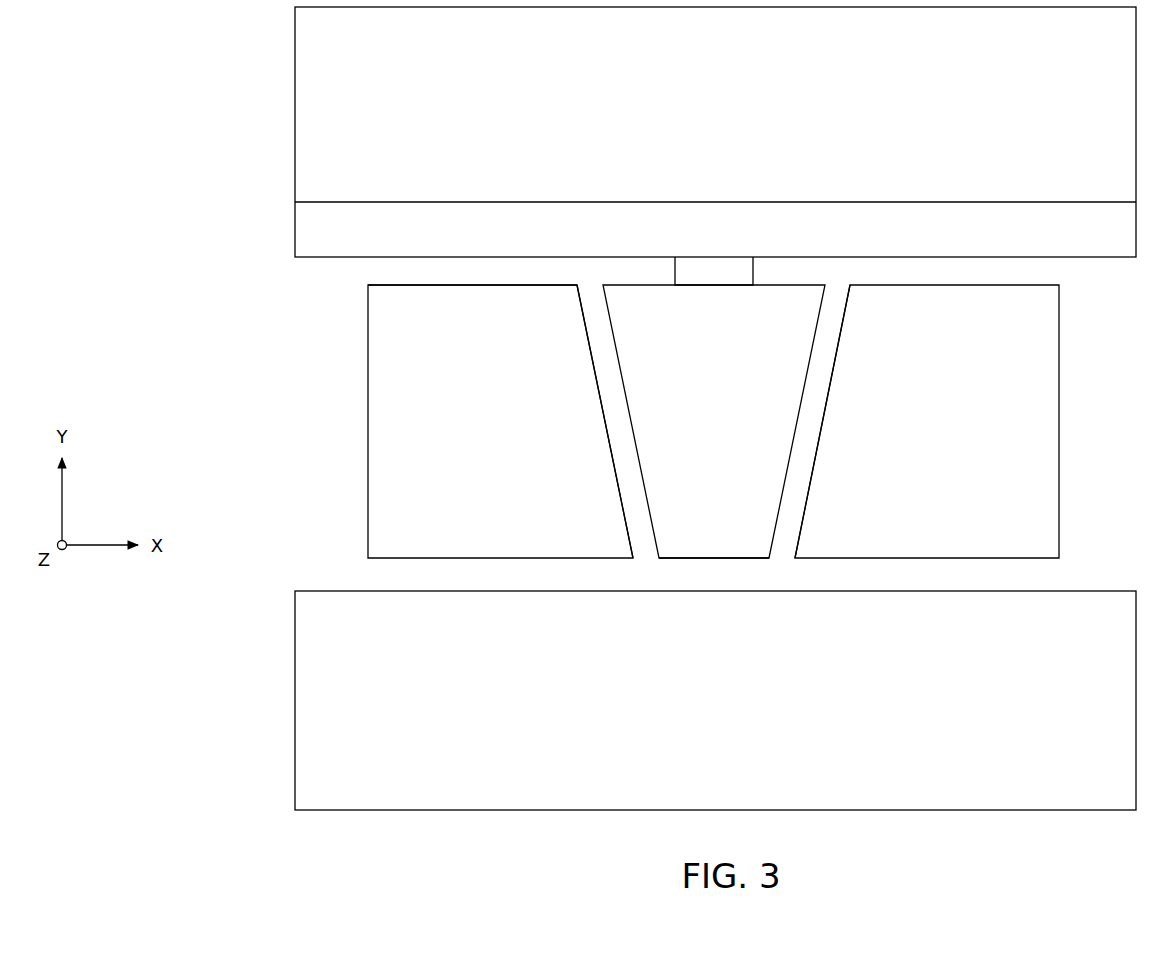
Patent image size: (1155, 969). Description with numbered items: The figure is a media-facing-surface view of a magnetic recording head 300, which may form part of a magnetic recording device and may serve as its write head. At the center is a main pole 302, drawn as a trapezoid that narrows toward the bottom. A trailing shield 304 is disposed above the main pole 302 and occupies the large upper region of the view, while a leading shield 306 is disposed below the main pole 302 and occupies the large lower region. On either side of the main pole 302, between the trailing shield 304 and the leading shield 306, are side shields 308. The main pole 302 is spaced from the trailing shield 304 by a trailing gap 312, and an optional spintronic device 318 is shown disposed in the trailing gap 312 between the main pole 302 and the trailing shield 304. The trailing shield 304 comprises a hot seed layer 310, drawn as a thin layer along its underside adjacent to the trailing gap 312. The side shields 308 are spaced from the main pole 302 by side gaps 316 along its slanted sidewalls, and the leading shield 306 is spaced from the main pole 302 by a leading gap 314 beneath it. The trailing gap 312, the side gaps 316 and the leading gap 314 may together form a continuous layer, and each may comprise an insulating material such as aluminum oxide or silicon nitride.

The magnetic recording head 300 is at (172, 91).
The main pole 302 is at (691, 442).
The trailing shield 304 is at (693, 137).
The leading shield 306 is at (693, 708).
The side shields 308 is at (494, 472).
The hot seed layer 310 is at (691, 238).
The trailing gap 312 is at (498, 283).
The leading gap 314 is at (693, 585).
The side gaps 316 is at (615, 398).
The spintronic device 318 is at (692, 282).